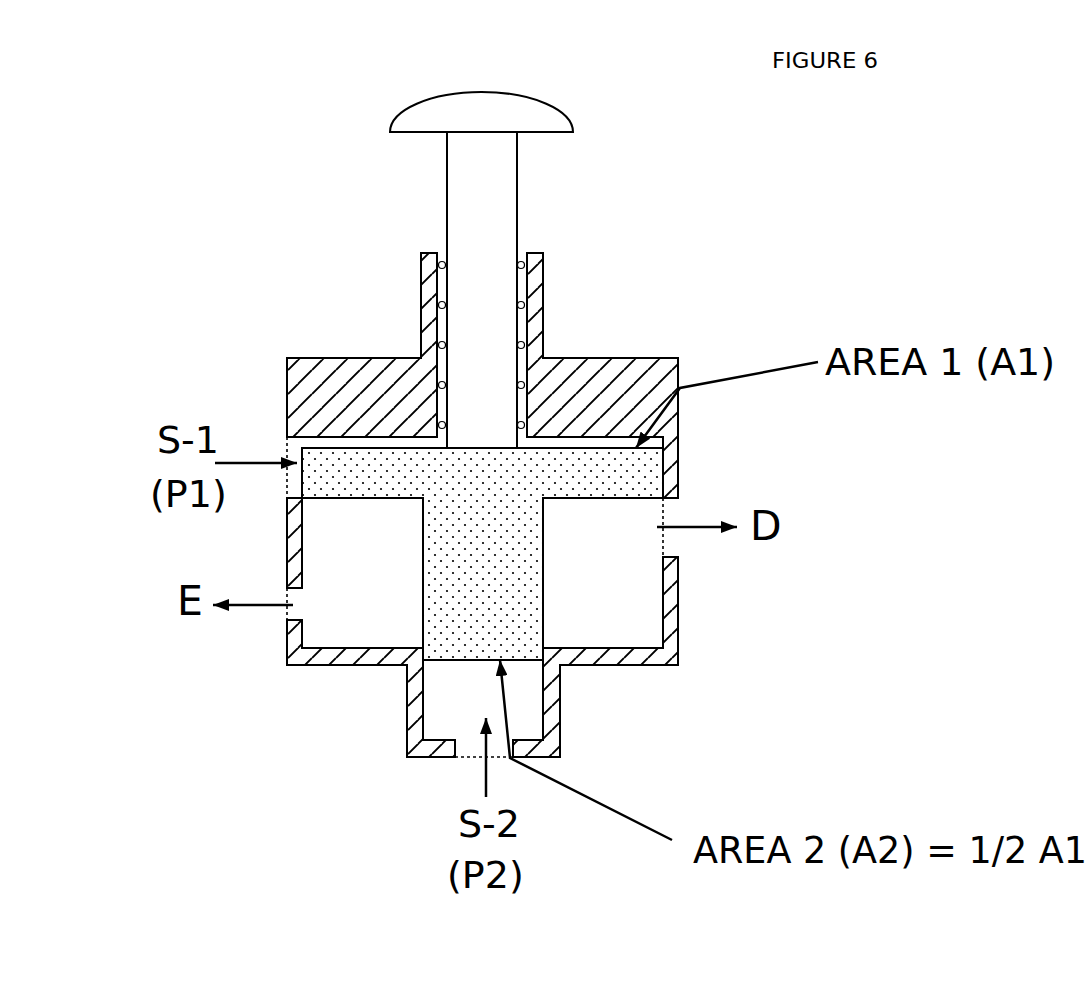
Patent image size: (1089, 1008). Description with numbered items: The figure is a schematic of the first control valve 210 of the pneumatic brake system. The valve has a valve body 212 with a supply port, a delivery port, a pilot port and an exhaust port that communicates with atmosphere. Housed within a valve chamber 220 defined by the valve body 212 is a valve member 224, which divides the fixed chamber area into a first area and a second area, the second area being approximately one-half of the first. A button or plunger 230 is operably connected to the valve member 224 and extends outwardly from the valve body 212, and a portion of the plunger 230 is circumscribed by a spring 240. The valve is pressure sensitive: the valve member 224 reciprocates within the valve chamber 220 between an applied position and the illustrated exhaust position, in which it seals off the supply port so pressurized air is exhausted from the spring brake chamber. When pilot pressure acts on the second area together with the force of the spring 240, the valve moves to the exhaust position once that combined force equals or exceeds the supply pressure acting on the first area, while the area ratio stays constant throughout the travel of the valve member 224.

The first control valve 210 is at (740, 243).
The valve body 212 is at (681, 463).
The valve chamber 220 is at (320, 542).
The valve member 224 is at (544, 579).
The plunger 230 is at (503, 332).
The spring 240 is at (389, 338).